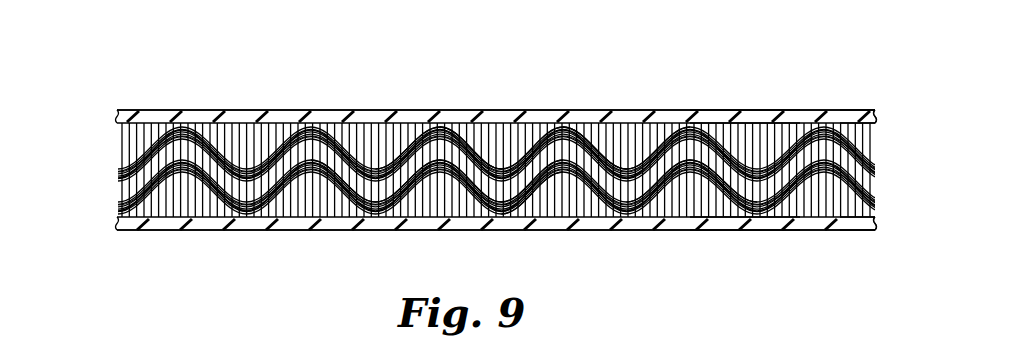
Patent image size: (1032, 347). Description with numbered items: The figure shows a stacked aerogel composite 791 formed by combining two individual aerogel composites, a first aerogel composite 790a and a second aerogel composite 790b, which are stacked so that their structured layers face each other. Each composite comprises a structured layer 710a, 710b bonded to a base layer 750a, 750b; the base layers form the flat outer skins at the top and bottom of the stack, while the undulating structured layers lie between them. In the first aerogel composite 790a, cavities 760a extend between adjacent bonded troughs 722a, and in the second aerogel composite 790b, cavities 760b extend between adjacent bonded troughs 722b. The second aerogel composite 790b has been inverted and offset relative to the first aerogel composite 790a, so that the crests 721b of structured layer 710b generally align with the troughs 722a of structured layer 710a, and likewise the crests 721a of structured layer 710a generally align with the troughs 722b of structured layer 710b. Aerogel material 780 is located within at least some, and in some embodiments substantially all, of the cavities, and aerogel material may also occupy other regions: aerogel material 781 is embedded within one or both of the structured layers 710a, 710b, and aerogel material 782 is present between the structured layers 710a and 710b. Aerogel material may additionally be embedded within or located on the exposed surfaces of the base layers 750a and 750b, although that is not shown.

The stacked aerogel composite 791 is at (186, 87).
The first aerogel composite 790a is at (112, 195).
The second aerogel composite 790b is at (112, 142).
The aerogel material 780 is at (385, 133).
The aerogel material 781 is at (277, 118).
The aerogel material 782 is at (237, 202).
The bonded troughs 722a is at (500, 217).
The bonded troughs 722b is at (448, 124).
The cavities 760a is at (556, 195).
The cavities 760b is at (498, 148).
The crests 721a is at (690, 180).
The crests 721b is at (632, 133).
The base layer 750a is at (755, 226).
The base layer 750b is at (725, 116).
The structured layer 710a is at (875, 192).
The structured layer 710b is at (876, 150).